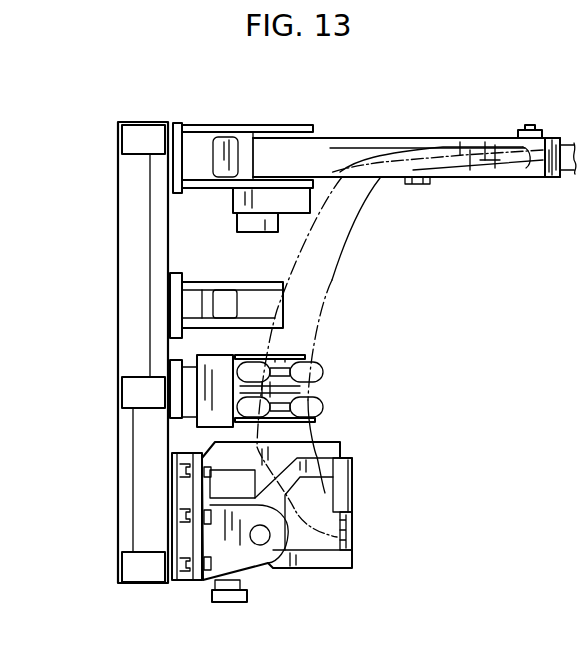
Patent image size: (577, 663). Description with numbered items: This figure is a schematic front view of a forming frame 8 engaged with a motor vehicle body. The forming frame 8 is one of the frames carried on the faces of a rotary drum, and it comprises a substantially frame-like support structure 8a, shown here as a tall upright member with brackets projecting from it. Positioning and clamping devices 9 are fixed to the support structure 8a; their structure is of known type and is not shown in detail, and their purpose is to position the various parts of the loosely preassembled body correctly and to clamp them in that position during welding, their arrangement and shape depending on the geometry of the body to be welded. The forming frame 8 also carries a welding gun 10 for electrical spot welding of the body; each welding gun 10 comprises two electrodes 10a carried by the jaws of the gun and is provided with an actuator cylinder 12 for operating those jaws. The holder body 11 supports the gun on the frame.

The forming frame 8 is at (218, 113).
The support structure 8a is at (117, 289).
The positioning and clamping device 9 is at (527, 168).
The welding gun 10 is at (324, 407).
The electrode 10a is at (350, 548).
The holder body 11 is at (348, 467).
The actuator cylinder 12 is at (243, 585).